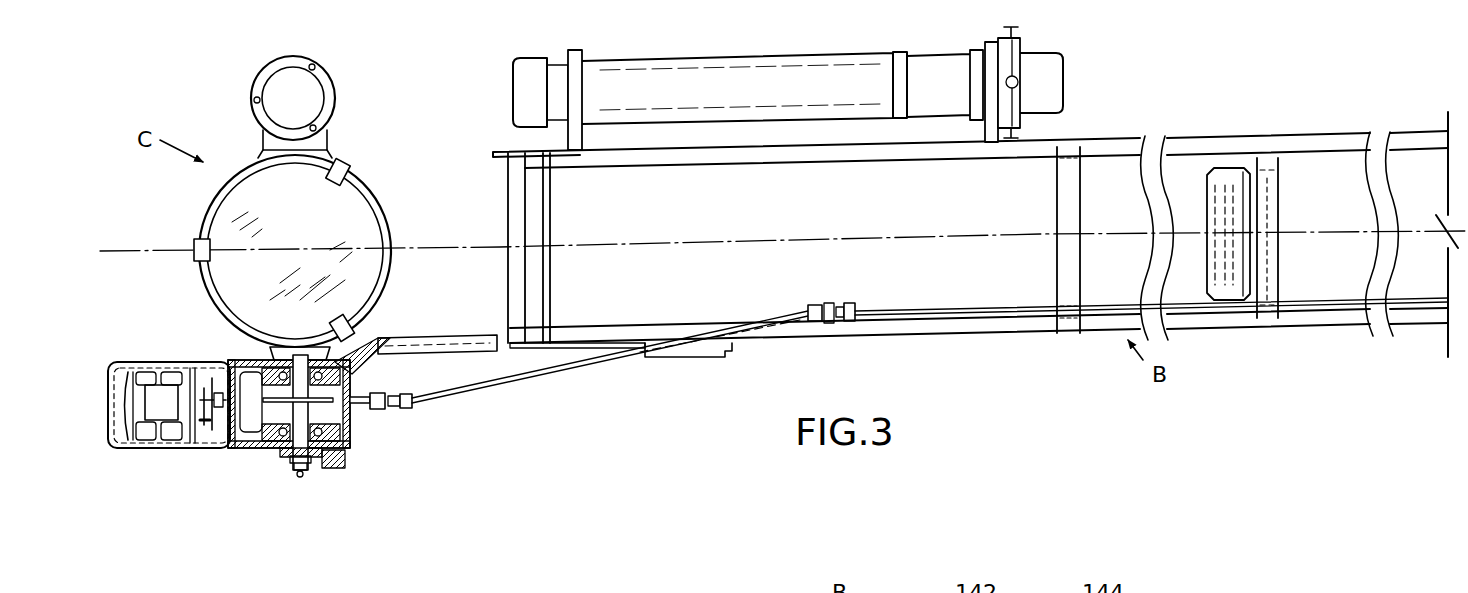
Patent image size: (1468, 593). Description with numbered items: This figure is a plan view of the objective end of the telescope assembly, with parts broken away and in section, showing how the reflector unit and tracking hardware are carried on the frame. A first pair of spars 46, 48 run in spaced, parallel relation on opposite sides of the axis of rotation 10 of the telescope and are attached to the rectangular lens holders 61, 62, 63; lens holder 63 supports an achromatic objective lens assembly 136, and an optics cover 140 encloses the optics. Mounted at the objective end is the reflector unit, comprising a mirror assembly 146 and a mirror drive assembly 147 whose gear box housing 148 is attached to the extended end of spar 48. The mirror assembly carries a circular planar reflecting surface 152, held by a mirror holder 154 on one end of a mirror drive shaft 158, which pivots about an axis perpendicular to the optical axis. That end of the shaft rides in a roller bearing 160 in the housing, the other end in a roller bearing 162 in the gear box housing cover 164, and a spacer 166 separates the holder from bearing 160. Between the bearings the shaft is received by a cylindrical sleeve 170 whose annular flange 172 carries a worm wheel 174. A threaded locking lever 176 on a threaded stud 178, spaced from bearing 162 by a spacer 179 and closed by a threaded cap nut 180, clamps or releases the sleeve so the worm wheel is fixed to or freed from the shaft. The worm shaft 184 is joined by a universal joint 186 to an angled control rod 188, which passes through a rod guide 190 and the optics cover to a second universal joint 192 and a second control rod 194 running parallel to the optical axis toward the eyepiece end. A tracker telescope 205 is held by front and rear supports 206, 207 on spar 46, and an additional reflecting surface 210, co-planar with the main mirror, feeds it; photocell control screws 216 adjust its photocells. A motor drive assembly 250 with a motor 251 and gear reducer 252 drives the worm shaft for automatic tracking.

The optical axis / centerline 10 is at (487, 243).
The spar 46 is at (884, 158).
The spar 48 is at (968, 329).
The lens holder 61 is at (542, 268).
The lens holder 62 is at (1057, 215).
The lens holder 63 is at (1268, 163).
The achromatic objective lens assembly 136 is at (1223, 166).
The optics cover 140 is at (757, 242).
The mirror assembly 146 is at (184, 281).
The mirror drive assembly 147 is at (329, 495).
The gear box housing 148 is at (253, 358).
The reflecting surface 152 is at (347, 222).
The mirror holder 154 is at (366, 186).
The mirror drive shaft 158 is at (302, 415).
The roller bearing 160 is at (368, 332).
The roller bearing 162 is at (282, 457).
The gear box housing cover 164 is at (353, 433).
The spacer 166 is at (293, 346).
The cylindrical sleeve 170 is at (282, 417).
The annular flange 172 is at (320, 397).
The worm wheel 174 is at (267, 407).
The threaded locking lever 176 is at (347, 463).
The threaded stud 178 is at (327, 472).
The spacer 179 is at (360, 443).
The threaded cap nut 180 is at (303, 478).
The shaft 184 is at (345, 397).
The universal joint 186 is at (414, 405).
The control rod 188 is at (550, 370).
The rod guide 190 is at (682, 350).
The second universal joint 192 is at (830, 294).
The second control rod 194 is at (1112, 308).
The tracker telescope 205 is at (730, 100).
The front support 206 is at (578, 50).
The rear support 207 is at (988, 46).
The additional reflecting surface 210 is at (318, 88).
The photocell control screws 216 is at (1019, 27).
The motor drive assembly 250 is at (168, 465).
The motor 251 is at (150, 433).
The gear reducer 252 is at (207, 375).